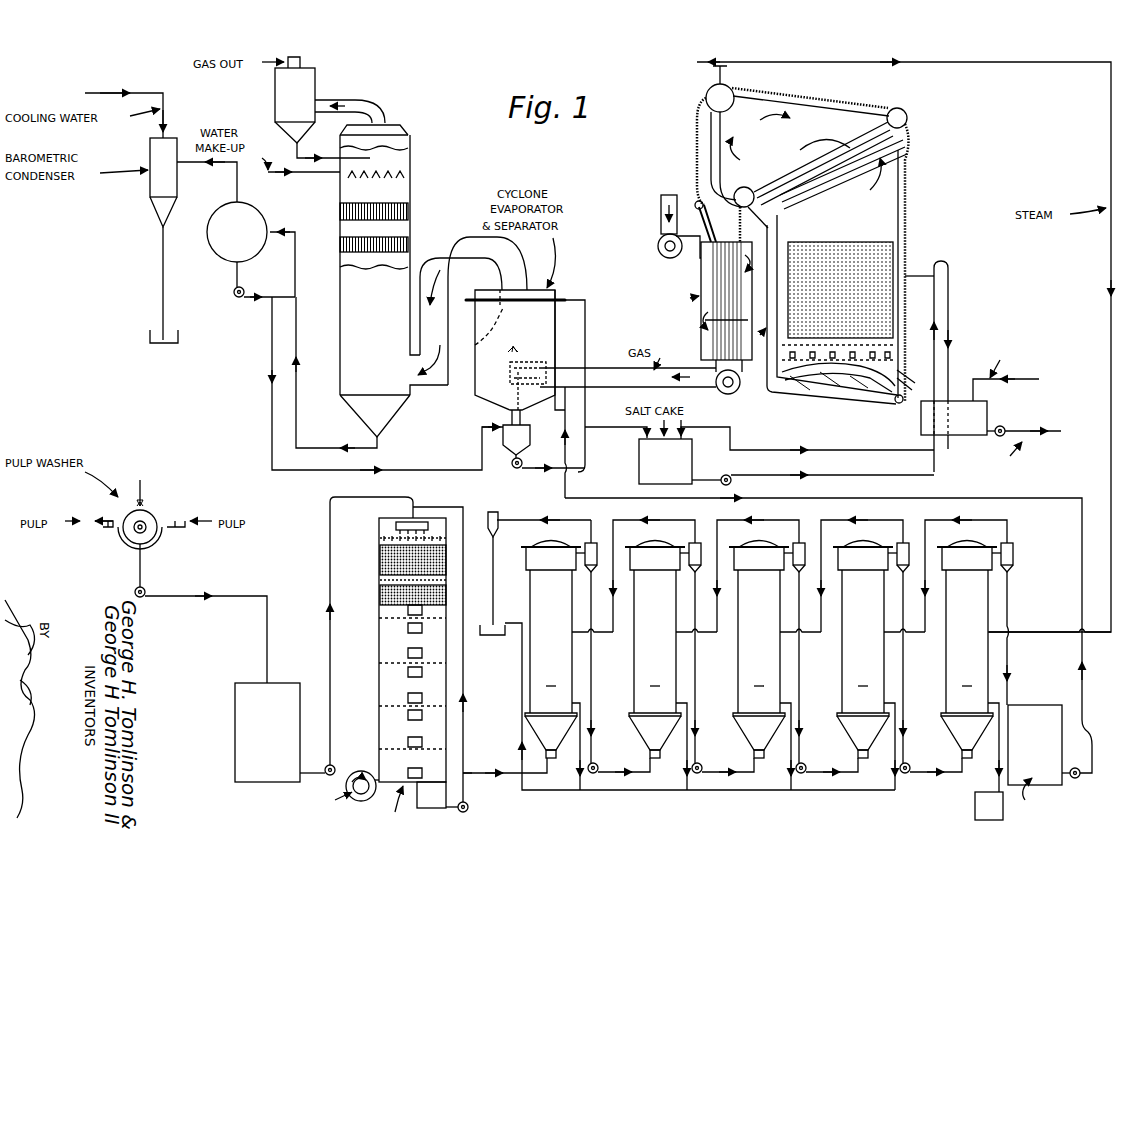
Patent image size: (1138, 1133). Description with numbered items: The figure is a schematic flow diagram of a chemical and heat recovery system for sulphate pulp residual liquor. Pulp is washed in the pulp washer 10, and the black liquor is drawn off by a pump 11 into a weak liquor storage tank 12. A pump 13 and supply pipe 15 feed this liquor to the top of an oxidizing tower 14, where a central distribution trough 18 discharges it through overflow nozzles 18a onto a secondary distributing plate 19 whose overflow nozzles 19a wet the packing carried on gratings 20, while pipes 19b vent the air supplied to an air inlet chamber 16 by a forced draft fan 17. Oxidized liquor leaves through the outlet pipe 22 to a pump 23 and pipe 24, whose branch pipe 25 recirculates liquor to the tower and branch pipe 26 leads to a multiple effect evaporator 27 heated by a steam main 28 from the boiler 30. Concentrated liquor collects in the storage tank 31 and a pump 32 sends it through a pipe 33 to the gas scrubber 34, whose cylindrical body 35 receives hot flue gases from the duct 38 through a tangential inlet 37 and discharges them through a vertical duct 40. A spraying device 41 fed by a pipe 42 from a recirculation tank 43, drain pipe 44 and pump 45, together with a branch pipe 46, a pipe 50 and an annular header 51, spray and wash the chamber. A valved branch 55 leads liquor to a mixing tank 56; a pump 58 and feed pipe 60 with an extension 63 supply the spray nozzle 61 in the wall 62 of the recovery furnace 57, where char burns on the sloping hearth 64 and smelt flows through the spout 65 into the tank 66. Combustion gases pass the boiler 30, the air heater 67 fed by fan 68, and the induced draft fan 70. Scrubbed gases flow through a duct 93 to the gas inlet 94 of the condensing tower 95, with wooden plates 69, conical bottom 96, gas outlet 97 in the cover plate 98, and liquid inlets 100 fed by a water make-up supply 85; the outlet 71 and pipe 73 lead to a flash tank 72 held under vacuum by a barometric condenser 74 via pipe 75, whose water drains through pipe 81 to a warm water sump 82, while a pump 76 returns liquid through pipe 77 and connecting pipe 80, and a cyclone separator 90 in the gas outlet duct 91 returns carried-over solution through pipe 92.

The pulp washer 10 is at (153, 513).
The pump 11 is at (147, 588).
The weak liquor storage tank 12 is at (235, 700).
The pump 13 is at (323, 766).
The oxidizing tower 14 is at (378, 638).
The supply pipe 15 is at (328, 643).
The air inlet chamber 16 is at (398, 773).
The forced draft fan 17 is at (357, 772).
The central distribution trough 18 is at (420, 516).
The overflow nozzles 18a is at (404, 520).
The secondary distributing plate 19 is at (380, 548).
The overflow nozzles 19a is at (380, 531).
The pipes 19b is at (448, 520).
The gratings 20 is at (380, 578).
The liquor outlet pipe 22 is at (431, 795).
The pump 23 is at (469, 806).
The pipe 24 is at (466, 786).
The branch pipe 25 is at (466, 720).
The branch pipe 26 is at (472, 770).
The multiple effect evaporator 27 is at (787, 666).
The steam main 28 is at (1004, 63).
The boiler 30 is at (808, 125).
The concentrated liquor storage tank 31 is at (1034, 716).
The pump 32 is at (1075, 767).
The pipe 33 is at (565, 492).
The gas scrubber 34 is at (520, 338).
The cylindrical body 35 is at (556, 330).
The tangential inlet 37 is at (538, 362).
The duct 38 is at (606, 366).
The vertical duct 40 is at (479, 323).
The spraying device 41 is at (507, 354).
The pipe 42 is at (574, 405).
The recirculation tank 43 is at (528, 438).
The drain pipe 44 is at (505, 409).
The pump 45 is at (517, 470).
The branch pipe 46 is at (551, 413).
The pipe 50 is at (587, 299).
The annular header 51 is at (563, 297).
The valved branch 55 is at (606, 426).
The mixing tank 56 is at (638, 462).
The recovery furnace 57 is at (850, 236).
The pump 58 is at (722, 476).
The feed pipe 60 is at (782, 474).
The liquor spray nozzle 61 is at (897, 278).
The wall 62 is at (905, 250).
The extension 63 is at (949, 298).
The sloping hearth 64 is at (845, 388).
The spout 65 is at (915, 371).
The tank 66 is at (988, 407).
The tubular air heater 67 is at (700, 290).
The forced draft fan 68 is at (658, 244).
The wooden plates 69 is at (400, 213).
The induced draft fan 70 is at (740, 392).
The outlet 71 is at (374, 442).
The flash tank 72 is at (220, 252).
The pipe 73 is at (296, 336).
The barometric condenser 74 is at (150, 185).
The pipe 75 is at (208, 172).
The pump 76 is at (237, 298).
The pipe 77 is at (266, 304).
The connecting pipe 80 is at (271, 424).
The pipe 81 is at (163, 285).
The warm water sump 82 is at (161, 357).
The water make-up supply 85 is at (302, 182).
The cyclone separator 90 is at (275, 92).
The gas outlet duct 91 is at (345, 103).
The pipe 92 is at (320, 156).
The duct 93 is at (460, 243).
The gas inlet 94 is at (410, 361).
The condensing tower 95 is at (373, 303).
The inverted conical bottom section 96 is at (398, 408).
The gas outlet 97 is at (375, 112).
The top cover plate 98 is at (400, 124).
The distributing liquid inlets 100 is at (375, 172).